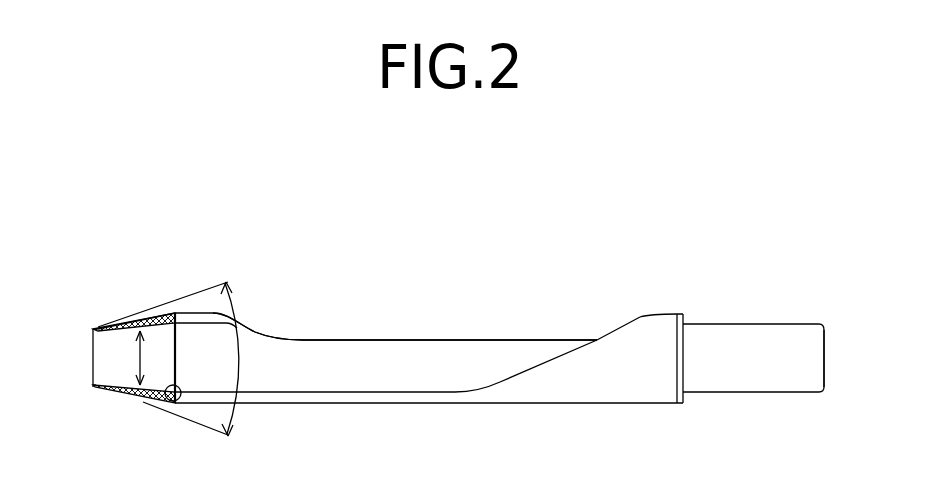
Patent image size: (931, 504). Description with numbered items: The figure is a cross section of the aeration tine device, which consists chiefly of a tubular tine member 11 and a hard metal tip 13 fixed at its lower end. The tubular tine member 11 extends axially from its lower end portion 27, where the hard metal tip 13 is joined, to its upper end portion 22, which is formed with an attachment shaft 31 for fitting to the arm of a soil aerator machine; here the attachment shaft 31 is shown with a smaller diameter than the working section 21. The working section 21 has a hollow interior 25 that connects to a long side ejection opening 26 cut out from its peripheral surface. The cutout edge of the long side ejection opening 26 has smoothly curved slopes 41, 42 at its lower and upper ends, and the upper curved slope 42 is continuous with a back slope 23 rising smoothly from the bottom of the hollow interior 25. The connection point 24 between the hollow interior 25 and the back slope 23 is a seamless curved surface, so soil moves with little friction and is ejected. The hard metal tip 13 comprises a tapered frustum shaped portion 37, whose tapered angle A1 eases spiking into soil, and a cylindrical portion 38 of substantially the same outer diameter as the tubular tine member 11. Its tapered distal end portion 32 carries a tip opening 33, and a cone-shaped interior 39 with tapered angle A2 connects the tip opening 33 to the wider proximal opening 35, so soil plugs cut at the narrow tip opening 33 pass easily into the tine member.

The tubular tine member 11 is at (605, 380).
The hard metal tip 13 is at (125, 402).
The working section 21 is at (667, 313).
The upper end portion 22 is at (757, 343).
The back slope 23 is at (537, 366).
The connection point 24 is at (453, 391).
The hollow interior 25 is at (353, 392).
The long side ejection opening 26 is at (333, 339).
The lower end portion 27 is at (182, 322).
The attachment shaft 31 is at (820, 350).
The tapered distal end portion 32 is at (92, 367).
The tip opening 33 is at (92, 337).
The proximal opening 35 is at (177, 403).
The tapered frustum shaped portion 37 is at (105, 325).
The cylindrical portion 38 is at (157, 312).
The cone-shaped interior 39 is at (92, 378).
The curved slope 41 is at (262, 330).
The curved slope 42 is at (620, 327).
The tapered angle A1 is at (184, 359).
The tapered angle A2 is at (131, 358).